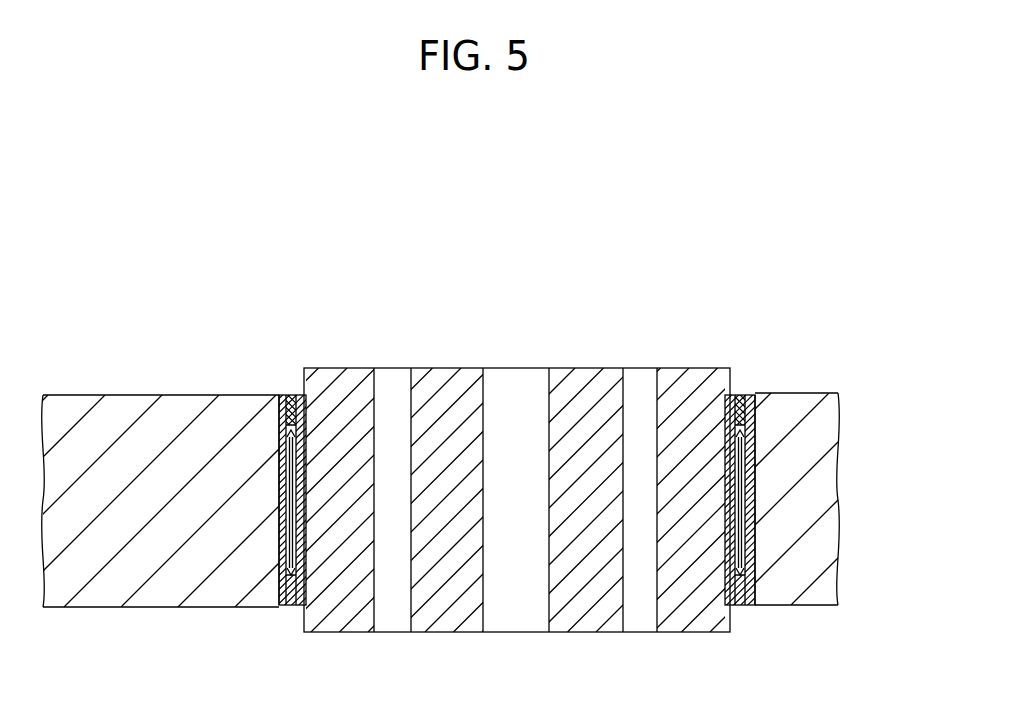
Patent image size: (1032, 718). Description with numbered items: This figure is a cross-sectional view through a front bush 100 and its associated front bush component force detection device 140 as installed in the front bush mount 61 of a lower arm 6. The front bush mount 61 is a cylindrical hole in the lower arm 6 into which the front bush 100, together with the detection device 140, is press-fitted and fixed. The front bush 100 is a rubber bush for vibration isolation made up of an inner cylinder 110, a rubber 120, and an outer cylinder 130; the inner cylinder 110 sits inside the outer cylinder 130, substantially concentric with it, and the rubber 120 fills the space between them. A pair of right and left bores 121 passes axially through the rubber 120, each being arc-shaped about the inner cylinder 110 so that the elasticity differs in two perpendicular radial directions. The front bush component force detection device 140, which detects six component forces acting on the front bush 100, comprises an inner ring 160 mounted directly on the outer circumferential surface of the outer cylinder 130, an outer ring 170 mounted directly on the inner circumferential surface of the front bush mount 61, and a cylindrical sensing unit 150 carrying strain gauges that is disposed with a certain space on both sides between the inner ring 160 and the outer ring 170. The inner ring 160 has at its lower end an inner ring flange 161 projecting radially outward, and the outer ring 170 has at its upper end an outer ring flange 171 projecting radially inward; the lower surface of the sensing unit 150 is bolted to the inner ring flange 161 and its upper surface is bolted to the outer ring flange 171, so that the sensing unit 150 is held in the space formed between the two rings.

The lower arm 6 is at (103, 415).
The front bush mount 61 is at (281, 440).
The front bush 100 is at (455, 320).
The inner cylinder 110 is at (520, 370).
The rubber 120 is at (355, 368).
The bores 121 is at (398, 368).
The outer cylinder 130 is at (303, 520).
The front bush component force detection device 140 is at (286, 360).
The sensing unit 150 is at (288, 598).
The inner ring 160 is at (296, 525).
The inner ring flange 161 is at (291, 560).
The outer ring 170 is at (279, 437).
The outer ring flange 171 is at (288, 428).